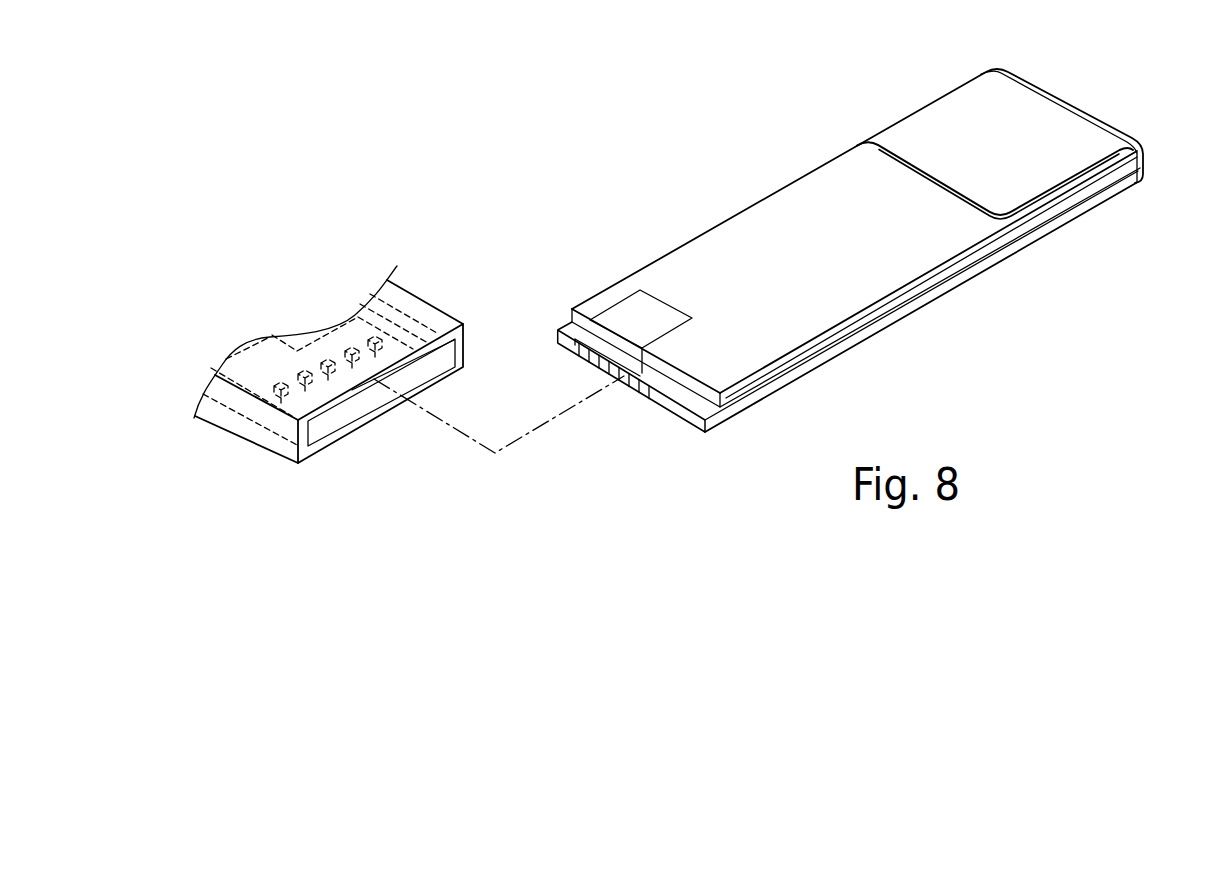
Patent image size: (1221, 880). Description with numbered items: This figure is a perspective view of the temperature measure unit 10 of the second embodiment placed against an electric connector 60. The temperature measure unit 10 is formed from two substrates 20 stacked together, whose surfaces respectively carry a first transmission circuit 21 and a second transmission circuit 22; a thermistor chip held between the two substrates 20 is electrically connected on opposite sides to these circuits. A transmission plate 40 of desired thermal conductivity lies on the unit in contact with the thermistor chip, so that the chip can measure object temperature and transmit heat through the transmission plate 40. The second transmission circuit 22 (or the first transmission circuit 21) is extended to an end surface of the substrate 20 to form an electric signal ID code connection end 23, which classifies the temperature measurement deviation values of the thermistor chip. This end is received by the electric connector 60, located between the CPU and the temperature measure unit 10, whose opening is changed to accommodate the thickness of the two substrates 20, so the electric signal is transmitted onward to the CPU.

The temperature measure unit 10 is at (850, 271).
The substrate 20 is at (727, 247).
The first transmission circuit 21 is at (633, 312).
The second transmission circuit 22 is at (707, 403).
The electric signal ID code connection end 23 is at (680, 413).
The transmission plate 40 is at (1053, 165).
The electric connector 60 is at (417, 295).